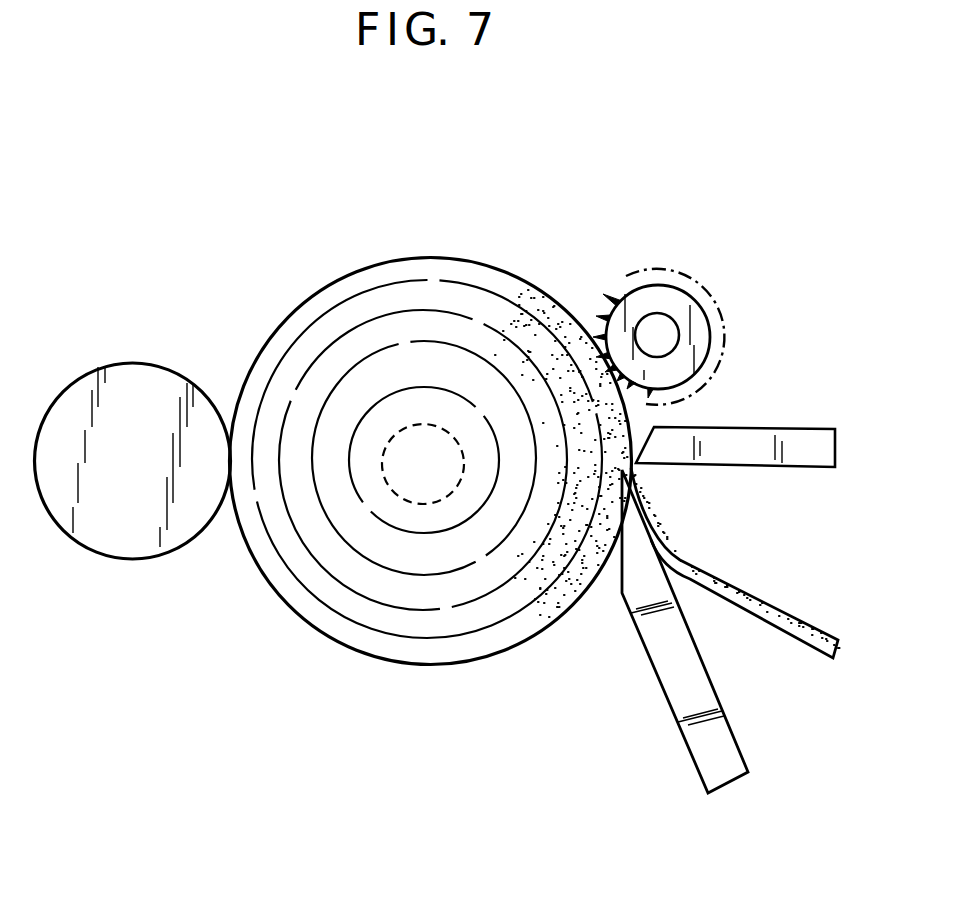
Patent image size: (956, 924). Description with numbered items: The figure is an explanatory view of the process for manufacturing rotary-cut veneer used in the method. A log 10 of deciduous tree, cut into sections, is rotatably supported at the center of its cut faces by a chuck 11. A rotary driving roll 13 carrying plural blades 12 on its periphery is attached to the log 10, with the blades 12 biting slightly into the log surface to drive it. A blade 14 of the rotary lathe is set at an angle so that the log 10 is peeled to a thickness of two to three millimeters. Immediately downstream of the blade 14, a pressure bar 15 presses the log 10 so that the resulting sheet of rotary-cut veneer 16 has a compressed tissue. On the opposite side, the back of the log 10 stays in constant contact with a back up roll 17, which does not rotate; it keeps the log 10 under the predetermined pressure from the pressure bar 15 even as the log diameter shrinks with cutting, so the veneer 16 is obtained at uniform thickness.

The log 10 is at (390, 260).
The chuck 11 is at (394, 493).
The blades 12 is at (597, 314).
The rotary driving roll 13 is at (680, 302).
The blade 14 is at (708, 733).
The pressure bar 15 is at (747, 440).
The rotary-cut veneer 16 is at (775, 613).
The back up roll 17 is at (132, 550).